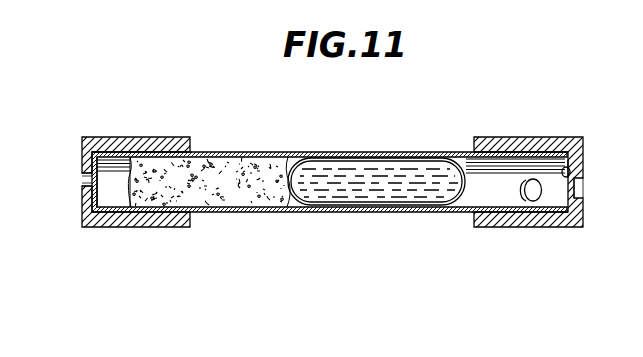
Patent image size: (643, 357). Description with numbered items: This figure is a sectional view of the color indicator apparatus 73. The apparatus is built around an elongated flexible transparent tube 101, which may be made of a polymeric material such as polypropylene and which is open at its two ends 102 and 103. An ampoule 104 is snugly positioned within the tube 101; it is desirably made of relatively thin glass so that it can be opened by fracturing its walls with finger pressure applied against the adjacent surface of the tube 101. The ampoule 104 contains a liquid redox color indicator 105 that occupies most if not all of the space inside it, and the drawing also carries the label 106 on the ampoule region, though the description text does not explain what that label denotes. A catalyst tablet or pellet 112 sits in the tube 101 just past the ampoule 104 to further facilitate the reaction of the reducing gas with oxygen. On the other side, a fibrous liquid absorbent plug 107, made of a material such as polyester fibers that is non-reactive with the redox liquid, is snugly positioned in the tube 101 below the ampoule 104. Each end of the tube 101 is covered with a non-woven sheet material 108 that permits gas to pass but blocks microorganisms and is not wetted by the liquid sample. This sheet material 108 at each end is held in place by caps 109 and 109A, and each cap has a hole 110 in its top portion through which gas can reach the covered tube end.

The color indicator apparatus 73 is at (368, 127).
The tube 101 is at (291, 152).
The end of tube 102 is at (571, 176).
The end of tube 103 is at (101, 152).
The ampoule 104 is at (425, 206).
The liquid redox color indicator 105 is at (356, 192).
The ampoule wall 106 is at (410, 162).
The fibrous liquid absorbent plug 107 is at (239, 195).
The non-woven sheet material 108 is at (118, 152).
The cap 109 is at (503, 148).
The cap 109A is at (128, 227).
The hole 110 is at (82, 180).
The catalyst tablet or pellet 112 is at (534, 200).